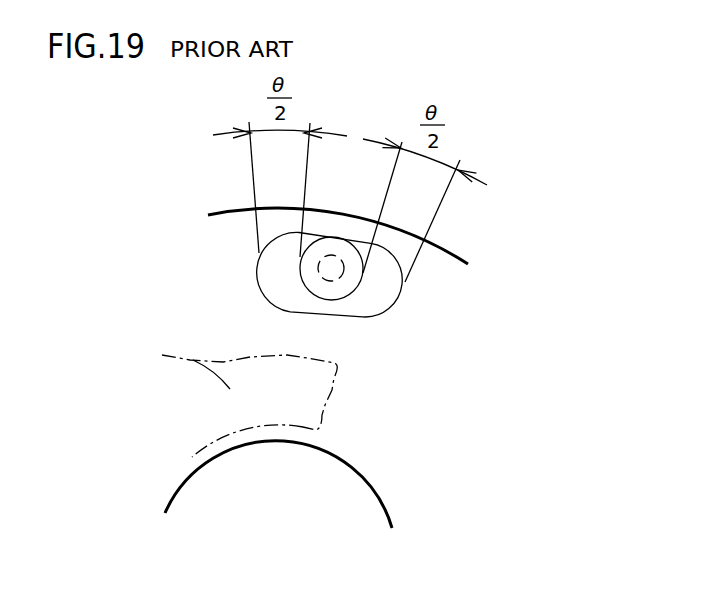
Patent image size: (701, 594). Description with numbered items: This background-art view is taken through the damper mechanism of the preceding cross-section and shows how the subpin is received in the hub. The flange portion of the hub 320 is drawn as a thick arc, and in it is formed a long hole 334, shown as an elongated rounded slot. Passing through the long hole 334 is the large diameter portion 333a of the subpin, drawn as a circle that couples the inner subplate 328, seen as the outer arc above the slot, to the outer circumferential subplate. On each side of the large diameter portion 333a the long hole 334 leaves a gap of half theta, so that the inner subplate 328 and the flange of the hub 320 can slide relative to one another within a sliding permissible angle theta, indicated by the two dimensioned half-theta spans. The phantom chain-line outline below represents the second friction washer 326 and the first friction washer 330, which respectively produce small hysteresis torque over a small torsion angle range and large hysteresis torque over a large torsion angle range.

The hub 320 is at (367, 493).
The second friction washer 326 is at (207, 363).
The inner subplate 328 is at (452, 253).
The first friction washer 330 is at (220, 399).
The large diameter portion 333a is at (345, 285).
The long hole 334 is at (372, 300).